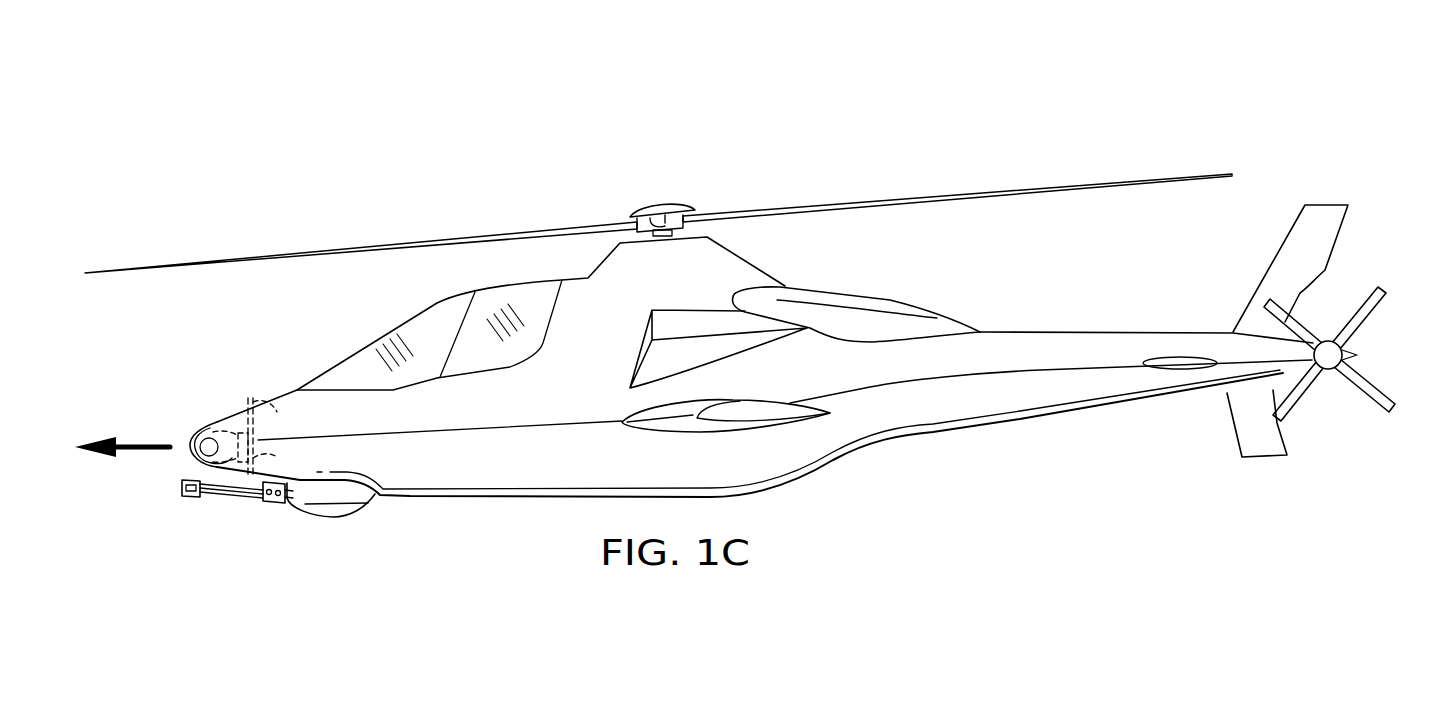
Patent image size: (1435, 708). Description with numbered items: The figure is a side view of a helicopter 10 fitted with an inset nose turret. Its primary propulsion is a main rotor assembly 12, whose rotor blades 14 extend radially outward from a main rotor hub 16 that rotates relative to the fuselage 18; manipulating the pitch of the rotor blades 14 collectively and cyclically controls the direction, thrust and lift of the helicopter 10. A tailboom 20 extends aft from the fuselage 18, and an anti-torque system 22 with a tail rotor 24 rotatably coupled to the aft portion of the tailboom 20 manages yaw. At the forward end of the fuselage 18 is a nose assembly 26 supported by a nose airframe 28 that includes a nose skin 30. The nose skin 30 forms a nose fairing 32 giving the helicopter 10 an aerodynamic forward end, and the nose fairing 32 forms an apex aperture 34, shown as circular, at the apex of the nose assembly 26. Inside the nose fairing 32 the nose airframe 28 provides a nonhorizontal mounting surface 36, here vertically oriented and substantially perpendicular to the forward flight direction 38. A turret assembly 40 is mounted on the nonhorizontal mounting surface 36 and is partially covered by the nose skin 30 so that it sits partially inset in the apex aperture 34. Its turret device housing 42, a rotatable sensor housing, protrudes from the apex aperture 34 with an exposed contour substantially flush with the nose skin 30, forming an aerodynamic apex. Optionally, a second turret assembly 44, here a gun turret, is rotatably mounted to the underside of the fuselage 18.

The helicopter 10 is at (500, 141).
The main rotor assembly 12 is at (658, 199).
The rotor blades 14 is at (1128, 181).
The main rotor hub 16 is at (653, 207).
The fuselage 18 is at (803, 484).
The tailboom 20 is at (1020, 330).
The anti-torque system 22 is at (1318, 329).
The tail rotor 24 is at (1363, 398).
The nose assembly 26 is at (230, 409).
The nose airframe 28 is at (255, 404).
The nose skin 30 is at (232, 412).
The nose fairing 32 is at (205, 427).
The apex aperture 34 is at (198, 432).
The nonhorizontal mounting surface 36 is at (278, 412).
The forward flight direction 38 is at (120, 453).
The turret assembly 40 is at (257, 457).
The turret device housing 42 is at (194, 455).
The second turret assembly 44 is at (330, 519).